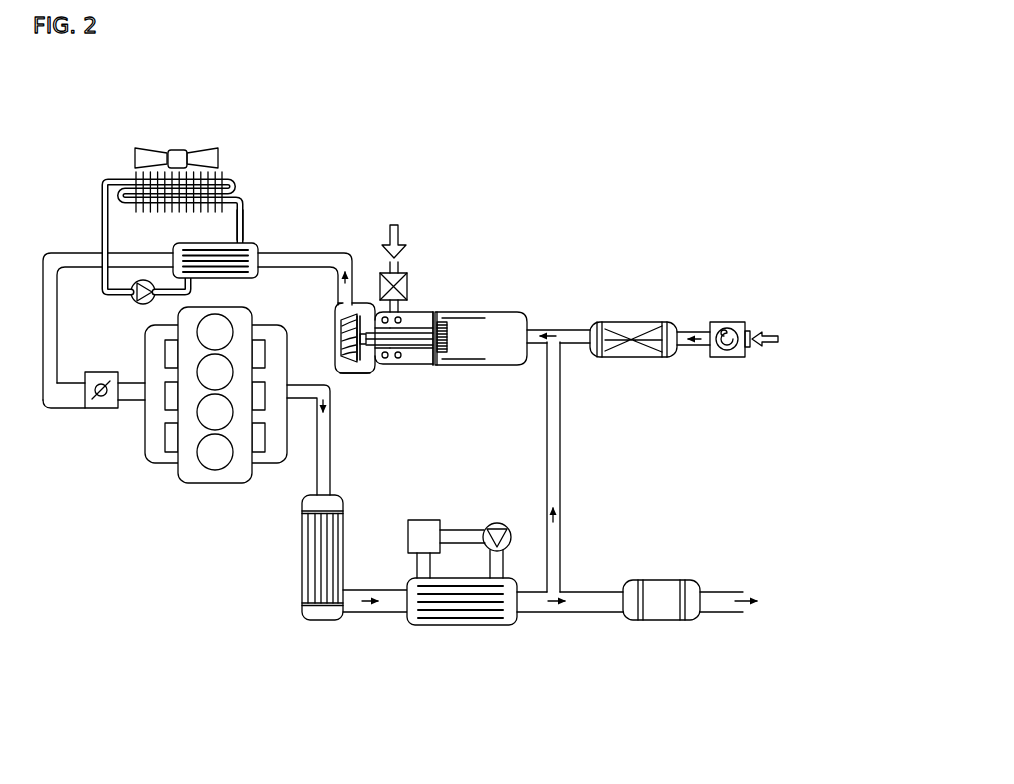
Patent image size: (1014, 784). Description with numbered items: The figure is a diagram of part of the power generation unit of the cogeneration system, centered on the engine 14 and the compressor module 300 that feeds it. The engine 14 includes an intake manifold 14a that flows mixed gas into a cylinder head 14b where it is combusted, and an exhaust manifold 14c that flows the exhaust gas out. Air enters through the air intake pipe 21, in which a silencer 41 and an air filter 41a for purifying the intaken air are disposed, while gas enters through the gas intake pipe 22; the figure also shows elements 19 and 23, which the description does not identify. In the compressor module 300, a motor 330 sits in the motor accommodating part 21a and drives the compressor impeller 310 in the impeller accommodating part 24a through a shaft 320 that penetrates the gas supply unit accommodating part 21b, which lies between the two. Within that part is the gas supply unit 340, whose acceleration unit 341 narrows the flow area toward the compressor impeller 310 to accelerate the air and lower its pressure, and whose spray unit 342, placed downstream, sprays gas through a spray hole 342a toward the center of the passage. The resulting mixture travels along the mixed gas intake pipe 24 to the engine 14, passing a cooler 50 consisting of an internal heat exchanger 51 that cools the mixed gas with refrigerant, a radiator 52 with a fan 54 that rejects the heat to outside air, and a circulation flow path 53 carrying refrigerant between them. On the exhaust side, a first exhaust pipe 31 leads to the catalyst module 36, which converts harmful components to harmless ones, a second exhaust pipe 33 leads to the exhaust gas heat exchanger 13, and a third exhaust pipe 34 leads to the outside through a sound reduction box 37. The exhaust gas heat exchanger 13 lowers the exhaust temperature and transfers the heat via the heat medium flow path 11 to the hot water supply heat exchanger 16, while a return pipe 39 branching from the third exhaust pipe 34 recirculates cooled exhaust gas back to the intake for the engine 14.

The heat medium flow path 11 is at (505, 565).
The exhaust gas heat exchanger 13 is at (482, 627).
The engine 14 is at (210, 454).
The intake manifold 14a is at (168, 466).
The cylinder head 14b is at (210, 484).
The exhaust manifold 14c is at (262, 466).
The hot water supply heat exchanger 16 is at (408, 538).
The pump 19 is at (497, 523).
The air intake pipe 21 is at (535, 330).
The motor accommodating part 21a is at (440, 348).
The gas supply unit accommodating part 21b is at (413, 365).
The gas intake pipe 22 is at (399, 263).
The valve 23 is at (407, 288).
The mixed gas intake pipe 24 is at (340, 250).
The impeller accommodating part 24a is at (350, 373).
The first exhaust pipe 31 is at (318, 385).
The second exhaust pipe 33 is at (375, 613).
The third exhaust pipe 34 is at (593, 613).
The catalyst module 36 is at (325, 621).
The sound reduction box 37 is at (659, 622).
The return pipe 39 is at (560, 548).
The silencer 41 is at (735, 322).
The air filter 41a is at (638, 322).
The cooler 50 is at (275, 100).
The internal heat exchanger 51 is at (255, 246).
The radiator 52 is at (233, 170).
The circulation flow path 53 is at (243, 214).
The fan 54 is at (200, 160).
The compressor module 300 is at (338, 312).
The compressor impeller 310 is at (346, 335).
The shaft 320 is at (400, 347).
The motor 330 is at (447, 342).
The gas supply unit 340 is at (496, 258).
The acceleration unit 341 is at (418, 330).
The spray unit 342 is at (398, 322).
The spray hole 342a is at (385, 364).